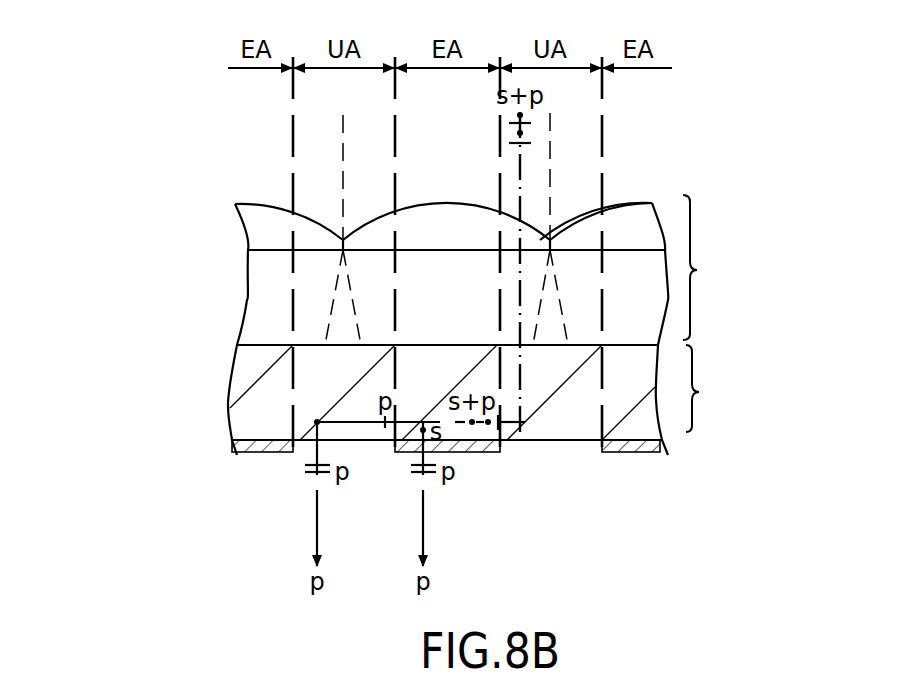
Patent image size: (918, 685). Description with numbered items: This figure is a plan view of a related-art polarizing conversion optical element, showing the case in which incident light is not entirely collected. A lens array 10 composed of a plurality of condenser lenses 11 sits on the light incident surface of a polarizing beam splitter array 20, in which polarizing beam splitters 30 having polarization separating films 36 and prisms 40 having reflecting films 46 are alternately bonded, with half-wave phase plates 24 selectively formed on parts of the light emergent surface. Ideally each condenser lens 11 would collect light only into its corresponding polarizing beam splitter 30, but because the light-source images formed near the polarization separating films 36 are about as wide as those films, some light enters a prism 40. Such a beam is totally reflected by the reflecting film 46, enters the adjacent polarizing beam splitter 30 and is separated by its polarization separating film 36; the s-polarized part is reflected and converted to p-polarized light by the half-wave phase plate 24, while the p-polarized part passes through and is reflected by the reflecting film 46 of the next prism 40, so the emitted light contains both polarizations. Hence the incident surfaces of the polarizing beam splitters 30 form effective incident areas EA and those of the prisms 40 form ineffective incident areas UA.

The lens array 10 is at (697, 270).
The condenser lens 11 is at (613, 207).
The polarizing beam splitter array 20 is at (699, 392).
The λ/2 phase plate 24 is at (492, 452).
The polarizing beam splitter 30 is at (425, 345).
The polarization separating film 36 is at (495, 345).
The prism 40 is at (380, 452).
The reflecting film 46 is at (376, 345).